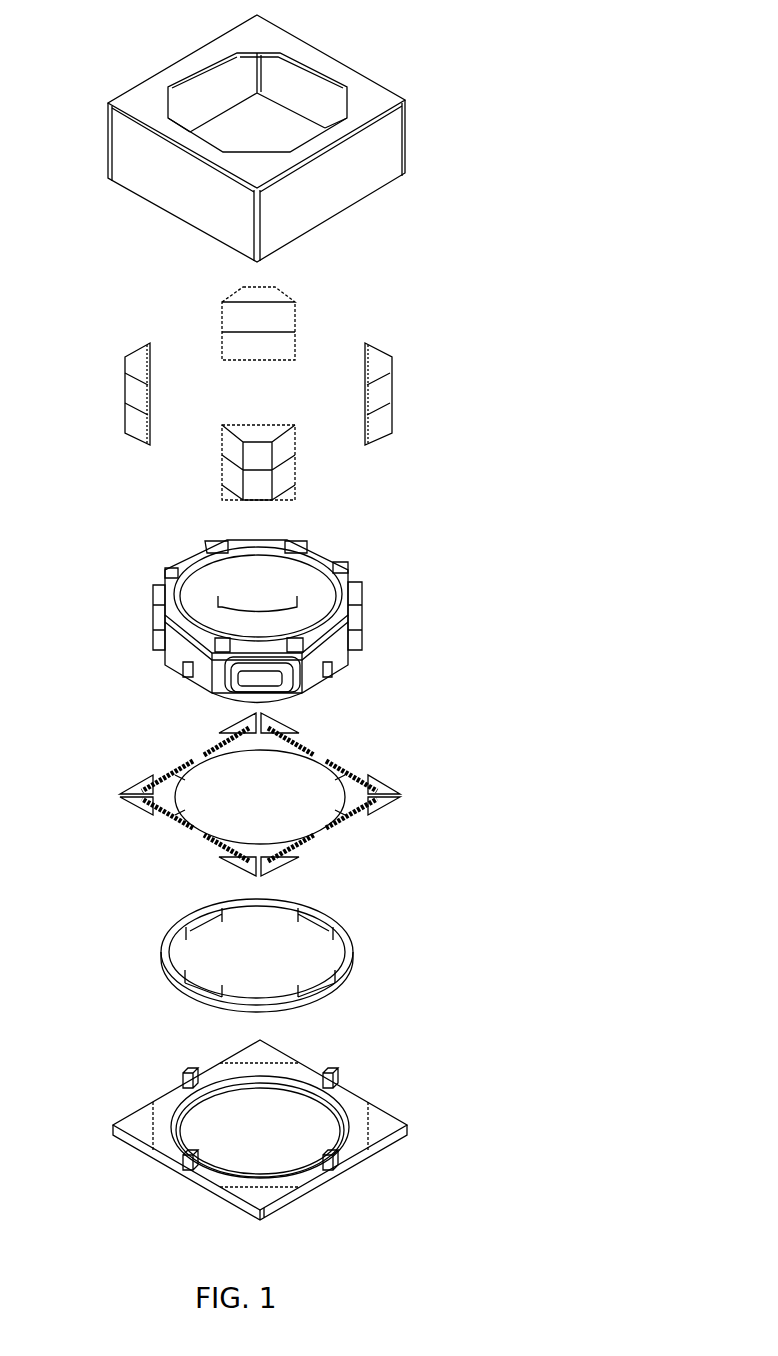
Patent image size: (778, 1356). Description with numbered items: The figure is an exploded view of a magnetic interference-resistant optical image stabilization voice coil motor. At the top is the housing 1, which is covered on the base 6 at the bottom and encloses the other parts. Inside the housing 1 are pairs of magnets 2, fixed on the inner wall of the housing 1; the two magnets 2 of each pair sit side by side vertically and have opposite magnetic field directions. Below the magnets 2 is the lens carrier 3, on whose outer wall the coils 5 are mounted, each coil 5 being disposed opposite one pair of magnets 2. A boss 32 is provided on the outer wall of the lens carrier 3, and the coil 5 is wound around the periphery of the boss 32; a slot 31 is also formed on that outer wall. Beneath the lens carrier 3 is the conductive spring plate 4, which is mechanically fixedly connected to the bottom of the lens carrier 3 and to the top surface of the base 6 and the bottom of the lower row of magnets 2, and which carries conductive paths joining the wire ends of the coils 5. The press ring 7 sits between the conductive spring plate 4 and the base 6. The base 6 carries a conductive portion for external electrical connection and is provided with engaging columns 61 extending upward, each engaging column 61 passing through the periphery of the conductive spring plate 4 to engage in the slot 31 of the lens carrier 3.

The housing 1 is at (135, 92).
The magnets 2 is at (137, 352).
The lens carrier 3 is at (182, 552).
The slot 31 is at (158, 655).
The coils 5 is at (291, 679).
The boss 32 is at (265, 680).
The conductive spring plate 4 is at (150, 775).
The press ring 7 is at (167, 935).
The base 6 is at (133, 1120).
The engaging column 61 is at (187, 1072).